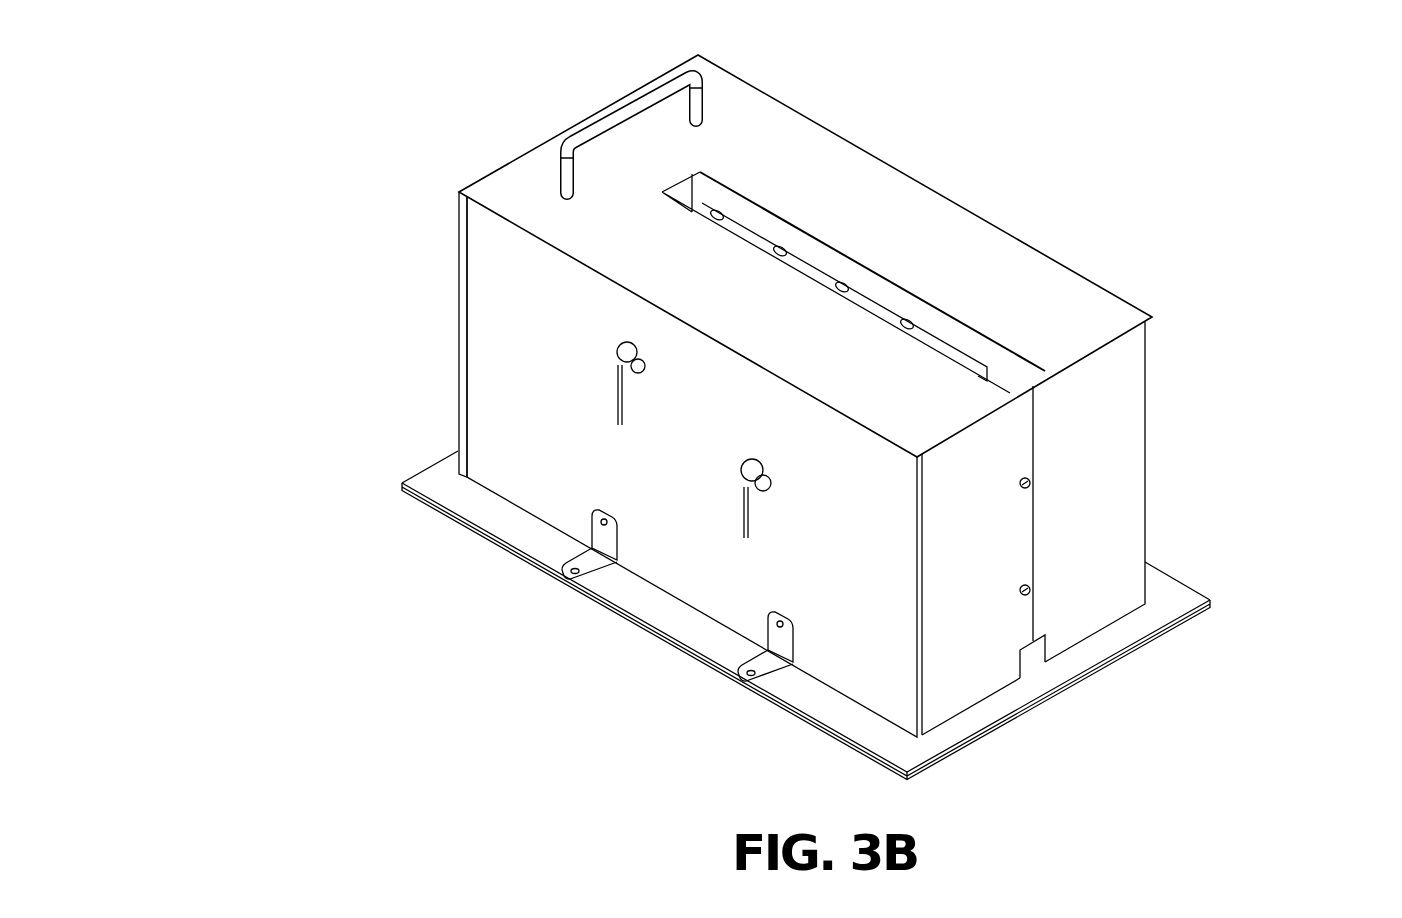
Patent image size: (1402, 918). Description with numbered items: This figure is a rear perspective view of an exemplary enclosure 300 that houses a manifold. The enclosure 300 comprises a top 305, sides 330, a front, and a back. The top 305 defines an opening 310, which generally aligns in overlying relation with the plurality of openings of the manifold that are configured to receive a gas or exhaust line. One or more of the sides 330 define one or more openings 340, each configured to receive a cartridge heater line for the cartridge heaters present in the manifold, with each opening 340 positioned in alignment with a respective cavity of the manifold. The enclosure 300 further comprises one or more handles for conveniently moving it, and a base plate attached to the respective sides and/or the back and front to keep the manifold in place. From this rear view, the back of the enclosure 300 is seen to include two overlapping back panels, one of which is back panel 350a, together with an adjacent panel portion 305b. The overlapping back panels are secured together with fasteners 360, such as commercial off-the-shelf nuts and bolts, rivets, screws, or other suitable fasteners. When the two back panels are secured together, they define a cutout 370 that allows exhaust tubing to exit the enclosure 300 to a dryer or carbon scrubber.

The enclosure 300 is at (210, 150).
The top 305 is at (860, 168).
The housing side panel 305b is at (968, 706).
The opening 310 is at (969, 318).
The sides 330 is at (536, 498).
The openings 340 is at (759, 508).
The back panel 350a is at (1135, 543).
The fasteners 360 is at (1042, 475).
The cutout 370 is at (1040, 662).